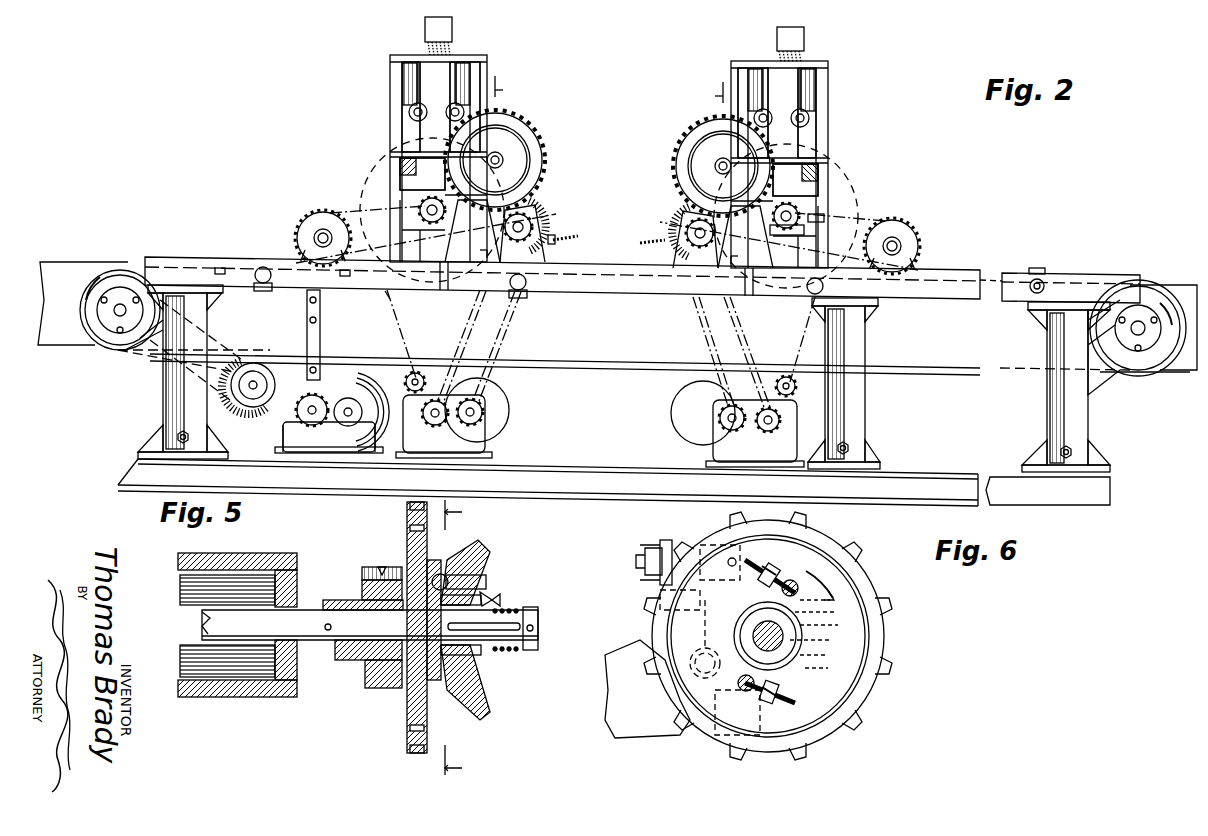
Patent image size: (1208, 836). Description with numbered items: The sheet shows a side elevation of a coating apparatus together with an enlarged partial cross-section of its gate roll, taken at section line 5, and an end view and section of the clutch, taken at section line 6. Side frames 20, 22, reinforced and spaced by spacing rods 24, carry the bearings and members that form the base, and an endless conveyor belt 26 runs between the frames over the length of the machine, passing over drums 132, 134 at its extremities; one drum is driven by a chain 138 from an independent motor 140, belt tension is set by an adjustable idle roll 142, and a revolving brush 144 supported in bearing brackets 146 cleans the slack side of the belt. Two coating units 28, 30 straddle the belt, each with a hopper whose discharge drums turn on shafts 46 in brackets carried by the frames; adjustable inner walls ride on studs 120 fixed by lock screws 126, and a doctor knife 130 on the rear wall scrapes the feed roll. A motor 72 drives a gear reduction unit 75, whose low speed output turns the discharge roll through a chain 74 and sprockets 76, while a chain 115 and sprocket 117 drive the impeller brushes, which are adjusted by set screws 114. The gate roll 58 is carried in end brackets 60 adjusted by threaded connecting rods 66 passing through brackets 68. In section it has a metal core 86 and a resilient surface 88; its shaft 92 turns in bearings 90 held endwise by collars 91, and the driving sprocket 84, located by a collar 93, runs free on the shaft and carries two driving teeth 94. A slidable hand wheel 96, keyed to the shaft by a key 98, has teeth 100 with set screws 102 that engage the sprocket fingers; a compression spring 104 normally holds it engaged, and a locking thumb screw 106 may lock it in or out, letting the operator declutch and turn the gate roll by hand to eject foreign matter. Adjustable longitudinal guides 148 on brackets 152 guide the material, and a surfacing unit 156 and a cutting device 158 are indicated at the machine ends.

In FIG. 2, the side frame 20 is at (162, 405).
In FIG. 2, the side frame 22 is at (1090, 495).
In FIG. 2, the shouldered spacing rod 24 is at (176, 438).
In FIG. 2, the endless conveyor belt 26 is at (130, 262).
In FIG. 2, the coating unit 28 is at (372, 128).
In FIG. 2, the coating unit 30 is at (872, 138).
In FIG. 2, the shaft 46 is at (420, 260).
In FIG. 5, the gate roll 58 is at (272, 553).
In FIG. 6, the end bracket 60 is at (732, 700).
In FIG. 6, the threaded connecting rod 66 is at (640, 563).
In FIG. 6, the bracket 68 is at (670, 540).
In FIG. 2, the motor 72 is at (505, 400).
In FIG. 2, the chain 74 is at (405, 332).
In FIG. 2, the gear reduction unit 75 is at (478, 432).
In FIG. 2, the sprocket 76 is at (432, 428).
In FIG. 5, the sprocket 84 is at (407, 740).
In FIG. 6, the sprocket 84 is at (845, 560).
In FIG. 5, the metal core 86 is at (297, 590).
In FIG. 5, the resilient surface 88 is at (240, 558).
In FIG. 5, the bearing 90 is at (370, 685).
In FIG. 5, the collar 91 is at (335, 600).
In FIG. 5, the gate roll shaft 92 is at (312, 642).
In FIG. 6, the gate roll shaft 92 is at (785, 633).
In FIG. 5, the collar 93 is at (430, 675).
In FIG. 5, the driving tooth 94 is at (441, 595).
In FIG. 6, the driving tooth 94 is at (797, 583).
In FIG. 5, the slidable member 96 is at (488, 545).
In FIG. 5, the key 98 is at (495, 630).
In FIG. 5, the projecting tooth 100 is at (458, 562).
In FIG. 6, the projecting tooth 100 is at (763, 700).
In FIG. 6, the set screw 102 is at (755, 560).
In FIG. 5, the compression spring 104 is at (505, 608).
In FIG. 5, the locking thumb screw 106 is at (496, 598).
In FIG. 2, the set screw 114 is at (572, 236).
In FIG. 2, the chain 115 is at (510, 325).
In FIG. 2, the sprocket 117 is at (490, 392).
In FIG. 2, the stud 120 is at (409, 112).
In FIG. 2, the lock screw 126 is at (810, 112).
In FIG. 2, the doctor knife 130 is at (806, 230).
In FIG. 2, the drum 132 is at (1160, 288).
In FIG. 2, the drum 134 is at (112, 270).
In FIG. 2, the chain 138 is at (275, 410).
In FIG. 2, the motor 140 is at (356, 386).
In FIG. 2, the adjustable idle roll 142 is at (330, 360).
In FIG. 2, the revolving brush 144 is at (321, 316).
In FIG. 2, the bearing bracket 146 is at (222, 330).
In FIG. 2, the longitudinal guide 148 is at (1128, 272).
In FIG. 2, the bracket 152 is at (1045, 268).
In FIG. 2, the unit 156 is at (1185, 360).
In FIG. 2, the cutting device 158 is at (62, 268).
In FIG. 2, the section line 5 is at (500, 171).
In FIG. 5, the section line 6 is at (448, 637).